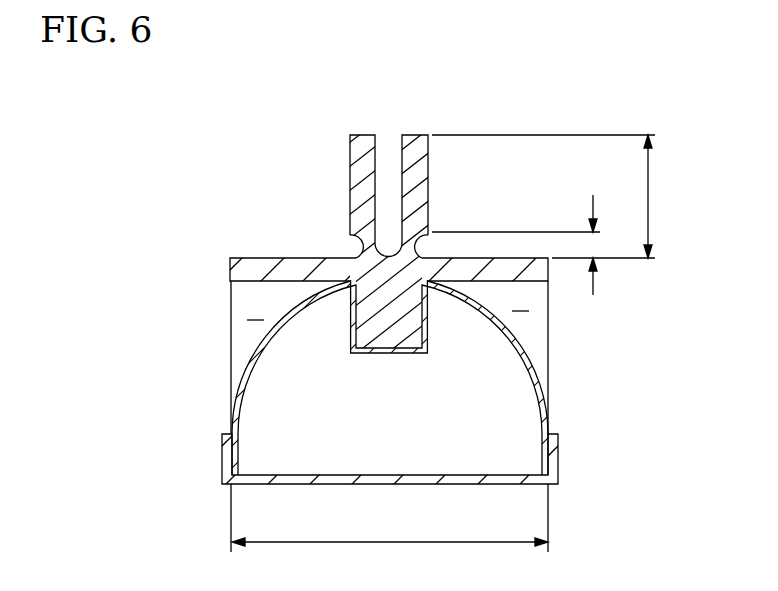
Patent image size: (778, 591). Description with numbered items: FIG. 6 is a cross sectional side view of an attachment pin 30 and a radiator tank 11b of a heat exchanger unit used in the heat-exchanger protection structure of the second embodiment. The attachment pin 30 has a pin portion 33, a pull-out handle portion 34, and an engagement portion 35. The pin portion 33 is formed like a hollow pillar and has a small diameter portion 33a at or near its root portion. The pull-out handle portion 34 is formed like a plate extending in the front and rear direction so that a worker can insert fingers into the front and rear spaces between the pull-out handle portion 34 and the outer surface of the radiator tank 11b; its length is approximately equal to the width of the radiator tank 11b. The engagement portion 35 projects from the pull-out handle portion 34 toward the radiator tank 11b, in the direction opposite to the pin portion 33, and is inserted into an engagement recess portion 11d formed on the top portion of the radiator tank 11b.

The attachment pin 30 is at (526, 218).
The pin portion 33 is at (413, 152).
The small diameter portion 33a is at (356, 248).
The engagement recess portion 11d is at (425, 254).
The pull-out handle portion 34 is at (248, 270).
The engagement portion 35 is at (402, 327).
The radiator tank 11b is at (547, 378).